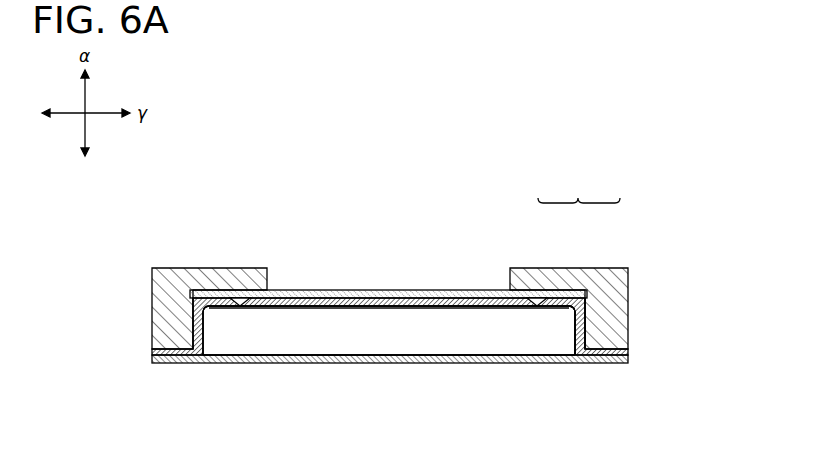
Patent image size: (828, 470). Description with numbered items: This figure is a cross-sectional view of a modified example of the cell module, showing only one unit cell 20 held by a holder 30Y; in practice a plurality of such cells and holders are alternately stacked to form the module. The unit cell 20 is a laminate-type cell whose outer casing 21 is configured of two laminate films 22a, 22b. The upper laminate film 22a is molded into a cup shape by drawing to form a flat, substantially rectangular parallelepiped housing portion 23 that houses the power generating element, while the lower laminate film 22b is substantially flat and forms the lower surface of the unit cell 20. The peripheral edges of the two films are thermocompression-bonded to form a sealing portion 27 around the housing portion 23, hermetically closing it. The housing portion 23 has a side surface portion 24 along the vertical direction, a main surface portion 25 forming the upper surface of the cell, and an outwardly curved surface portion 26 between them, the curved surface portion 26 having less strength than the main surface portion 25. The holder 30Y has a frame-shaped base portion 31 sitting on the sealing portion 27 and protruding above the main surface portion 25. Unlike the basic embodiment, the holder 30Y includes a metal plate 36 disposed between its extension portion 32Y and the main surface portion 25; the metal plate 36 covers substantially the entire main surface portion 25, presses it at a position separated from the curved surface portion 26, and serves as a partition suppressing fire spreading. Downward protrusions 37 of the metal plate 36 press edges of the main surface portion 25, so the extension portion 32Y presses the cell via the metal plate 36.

The unit cell 20 is at (400, 343).
The outer casing 21 is at (586, 322).
The laminate film 22a is at (442, 309).
The laminate film 22b is at (488, 364).
The housing portion 23 is at (588, 322).
The side surface portion 24 is at (195, 325).
The main surface portion 25 is at (291, 290).
The curved surface portion 26 is at (197, 268).
The sealing portion 27 is at (174, 364).
The holder 30Y is at (579, 188).
The base portion 31 is at (608, 273).
The extension portion 32Y is at (538, 292).
The metal plate 36 is at (332, 298).
The protrusion 37 is at (232, 307).